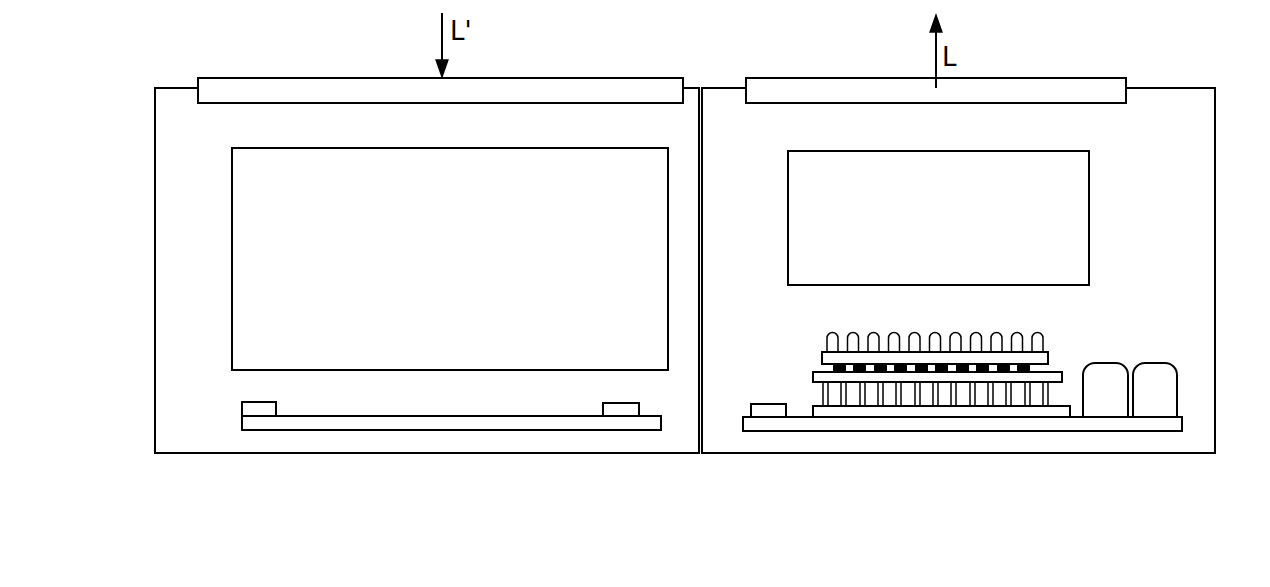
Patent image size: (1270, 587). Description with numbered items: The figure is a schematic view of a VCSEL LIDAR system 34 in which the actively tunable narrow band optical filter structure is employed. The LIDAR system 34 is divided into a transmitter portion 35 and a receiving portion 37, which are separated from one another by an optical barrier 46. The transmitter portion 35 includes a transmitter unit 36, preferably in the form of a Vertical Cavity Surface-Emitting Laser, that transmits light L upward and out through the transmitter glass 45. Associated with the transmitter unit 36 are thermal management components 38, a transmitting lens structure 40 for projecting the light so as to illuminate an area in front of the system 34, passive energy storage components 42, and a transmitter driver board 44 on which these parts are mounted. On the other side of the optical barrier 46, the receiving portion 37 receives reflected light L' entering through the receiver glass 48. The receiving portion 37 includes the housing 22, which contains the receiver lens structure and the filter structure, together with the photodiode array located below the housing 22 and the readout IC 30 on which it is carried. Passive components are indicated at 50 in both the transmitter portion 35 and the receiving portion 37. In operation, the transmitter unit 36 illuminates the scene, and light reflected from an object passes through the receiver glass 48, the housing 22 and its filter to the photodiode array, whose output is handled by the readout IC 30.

The receiving optics housing 22 is at (240, 262).
The readout integrated circuit 30 is at (315, 430).
The LIDAR system 34 is at (370, 48).
The transmitter portion 35 is at (990, 35).
The transmitter unit 36 is at (1043, 335).
The receiving portion 37 is at (208, 468).
The thermal management components 38 is at (1020, 398).
The transmitting lens structure 40 is at (1089, 218).
The passive energy storage components 42 is at (1182, 408).
The transmitter driver board 44 is at (962, 431).
The transmitter glass 45 is at (1072, 90).
The optical barrier 46 is at (702, 127).
The receiver glass 48 is at (237, 86).
The passive components 50 is at (628, 417).